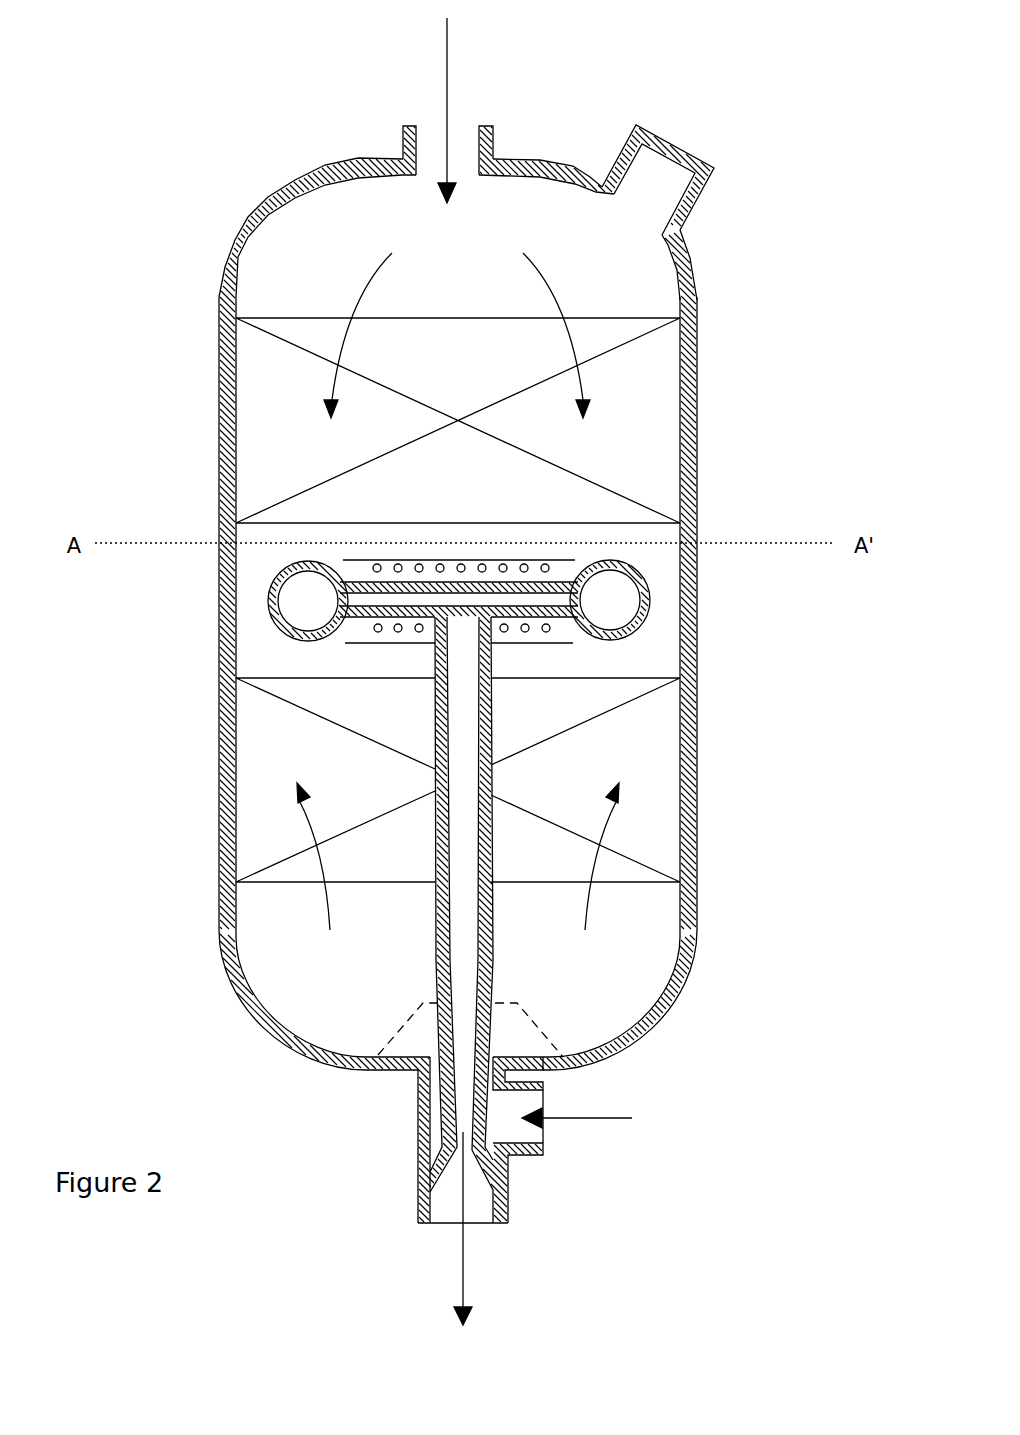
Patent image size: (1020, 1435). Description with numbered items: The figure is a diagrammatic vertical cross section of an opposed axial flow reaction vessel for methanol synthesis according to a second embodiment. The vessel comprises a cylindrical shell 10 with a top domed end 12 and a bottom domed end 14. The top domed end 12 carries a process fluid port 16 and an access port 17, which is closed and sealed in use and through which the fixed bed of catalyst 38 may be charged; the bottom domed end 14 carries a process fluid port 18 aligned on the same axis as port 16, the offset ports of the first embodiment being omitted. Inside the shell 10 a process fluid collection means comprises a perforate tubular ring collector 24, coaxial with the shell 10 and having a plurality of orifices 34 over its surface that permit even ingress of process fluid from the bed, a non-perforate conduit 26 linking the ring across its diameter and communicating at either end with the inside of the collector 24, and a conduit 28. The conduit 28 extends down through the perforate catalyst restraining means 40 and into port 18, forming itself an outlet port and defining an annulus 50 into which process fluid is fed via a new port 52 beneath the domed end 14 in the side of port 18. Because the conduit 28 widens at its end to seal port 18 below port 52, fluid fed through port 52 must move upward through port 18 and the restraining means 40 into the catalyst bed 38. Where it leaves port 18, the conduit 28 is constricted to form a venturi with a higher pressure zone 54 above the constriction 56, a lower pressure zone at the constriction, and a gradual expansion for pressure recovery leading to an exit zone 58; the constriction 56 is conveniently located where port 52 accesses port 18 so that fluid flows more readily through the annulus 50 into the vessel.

The cylindrical shell 10 is at (217, 466).
The domed end 12 is at (252, 212).
The domed end 14 is at (246, 1000).
The process fluid port 16 is at (404, 130).
The access port 17 is at (688, 210).
The process fluid port 18 is at (420, 1105).
The perforate tubular ring collector 24 is at (270, 595).
The non-perforate conduit 26 is at (303, 646).
The conduit 28 is at (435, 750).
The orifices 34 is at (640, 630).
The fixed bed of catalyst 38 is at (625, 428).
The perforate catalyst restraining means 40 is at (427, 1018).
The annulus 50 is at (438, 1115).
The port 52 is at (530, 1153).
The higher pressure zone 54 is at (515, 1067).
The constriction 56 is at (463, 1107).
The exit zone 58 is at (477, 1195).